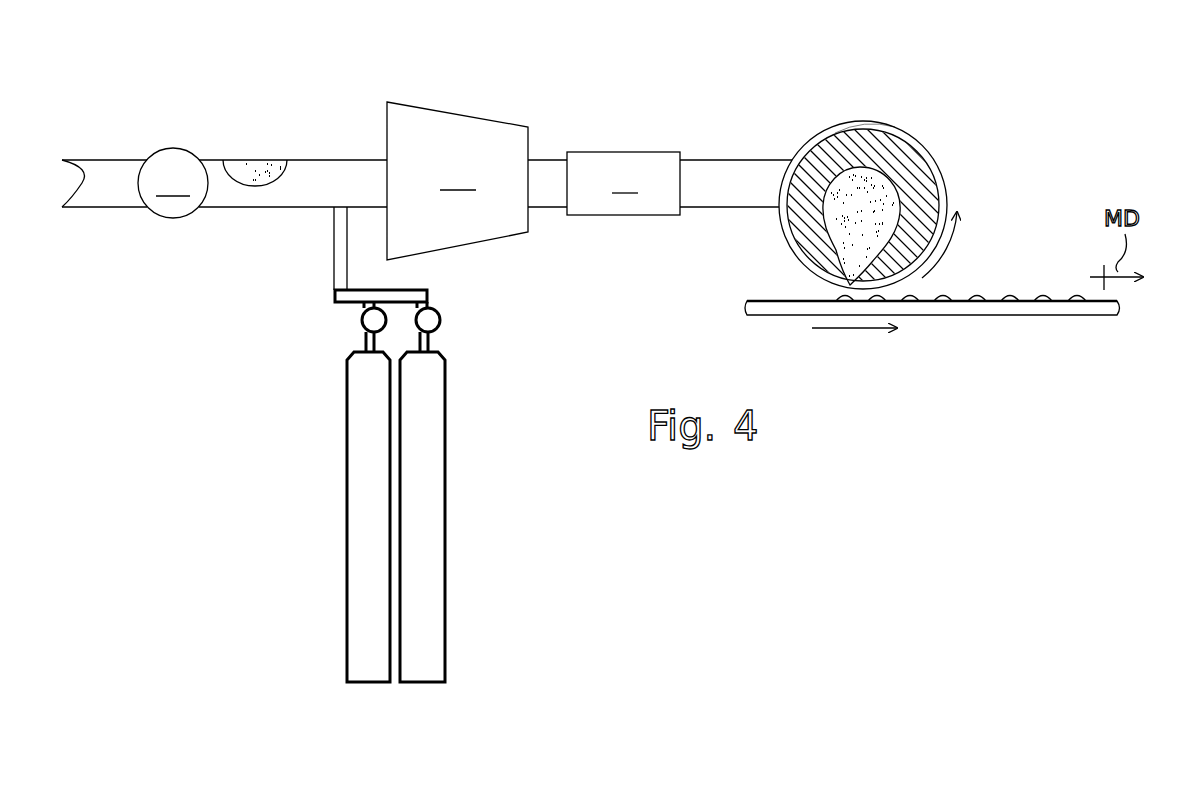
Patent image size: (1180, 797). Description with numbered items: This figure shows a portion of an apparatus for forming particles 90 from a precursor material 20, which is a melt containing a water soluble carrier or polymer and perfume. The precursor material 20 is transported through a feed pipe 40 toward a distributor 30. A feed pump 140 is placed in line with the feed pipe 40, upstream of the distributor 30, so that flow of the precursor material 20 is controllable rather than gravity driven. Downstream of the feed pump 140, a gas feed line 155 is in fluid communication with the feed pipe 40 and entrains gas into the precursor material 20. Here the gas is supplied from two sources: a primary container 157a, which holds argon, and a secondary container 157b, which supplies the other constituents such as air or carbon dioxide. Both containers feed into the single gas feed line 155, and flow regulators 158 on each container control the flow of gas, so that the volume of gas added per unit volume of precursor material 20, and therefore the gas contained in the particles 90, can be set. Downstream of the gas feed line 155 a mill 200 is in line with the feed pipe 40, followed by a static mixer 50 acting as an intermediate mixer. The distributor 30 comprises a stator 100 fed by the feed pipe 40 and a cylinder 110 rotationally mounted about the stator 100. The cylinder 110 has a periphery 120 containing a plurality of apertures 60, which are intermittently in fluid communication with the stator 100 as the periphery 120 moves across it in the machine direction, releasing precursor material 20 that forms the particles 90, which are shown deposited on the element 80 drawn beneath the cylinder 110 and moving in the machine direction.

The precursor material 20 is at (250, 160).
The distributor 30 is at (952, 157).
The feed pipe 40 is at (310, 194).
The static mixer 50 is at (623, 183).
The apertures 60 is at (880, 187).
The web substrate 80 is at (760, 316).
The particles 90 is at (1007, 295).
The stator 100 is at (858, 168).
The cylinder 110 is at (917, 140).
The periphery 120 is at (832, 298).
The feed pump 140 is at (168, 222).
The gas feed line 155 is at (333, 290).
The primary container 157a is at (368, 395).
The secondary container 157b is at (415, 398).
The flow regulator 158 is at (432, 318).
The mill 200 is at (457, 181).